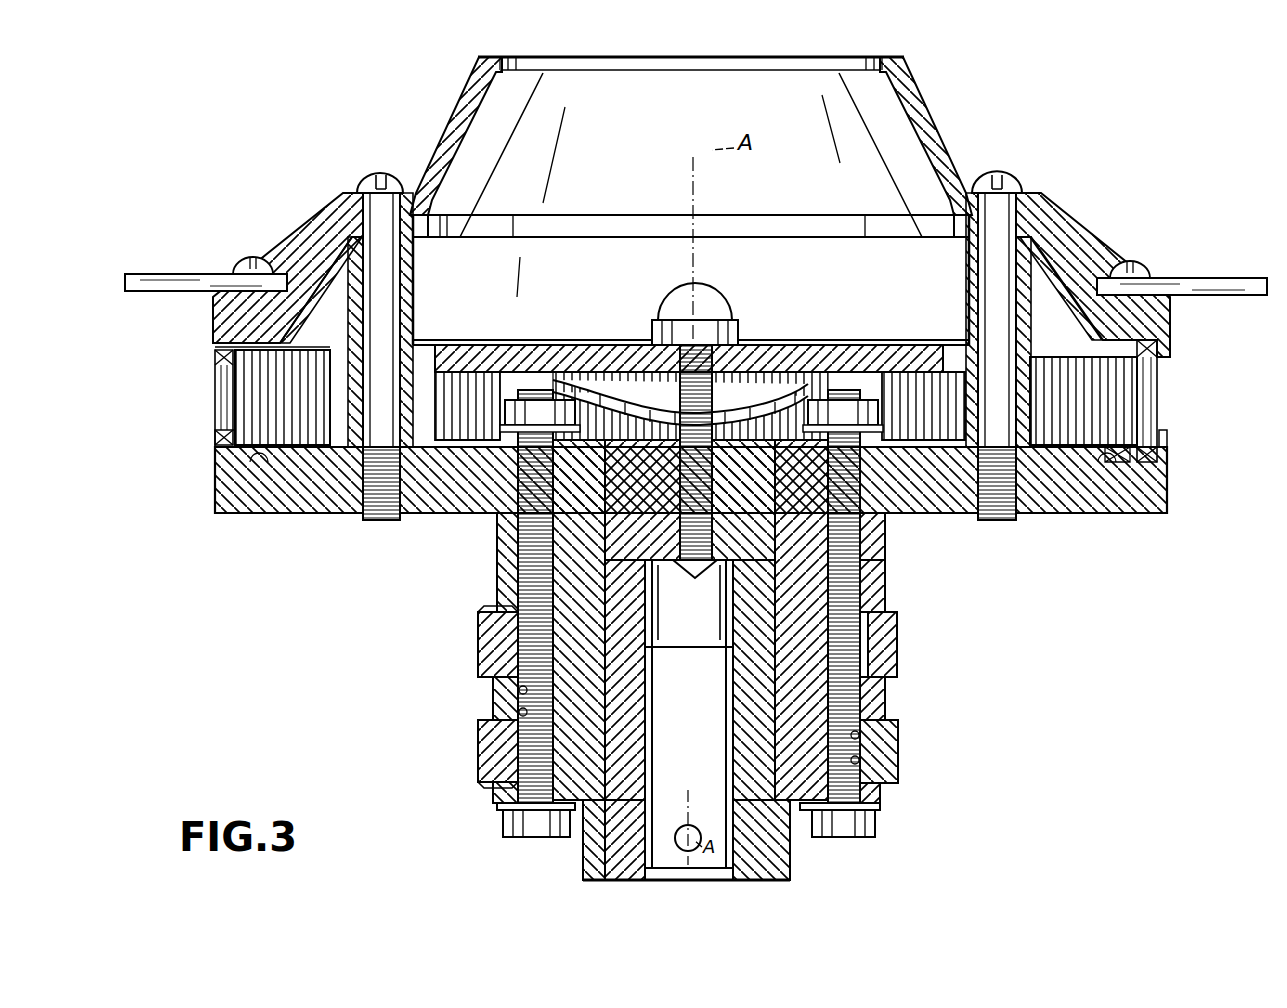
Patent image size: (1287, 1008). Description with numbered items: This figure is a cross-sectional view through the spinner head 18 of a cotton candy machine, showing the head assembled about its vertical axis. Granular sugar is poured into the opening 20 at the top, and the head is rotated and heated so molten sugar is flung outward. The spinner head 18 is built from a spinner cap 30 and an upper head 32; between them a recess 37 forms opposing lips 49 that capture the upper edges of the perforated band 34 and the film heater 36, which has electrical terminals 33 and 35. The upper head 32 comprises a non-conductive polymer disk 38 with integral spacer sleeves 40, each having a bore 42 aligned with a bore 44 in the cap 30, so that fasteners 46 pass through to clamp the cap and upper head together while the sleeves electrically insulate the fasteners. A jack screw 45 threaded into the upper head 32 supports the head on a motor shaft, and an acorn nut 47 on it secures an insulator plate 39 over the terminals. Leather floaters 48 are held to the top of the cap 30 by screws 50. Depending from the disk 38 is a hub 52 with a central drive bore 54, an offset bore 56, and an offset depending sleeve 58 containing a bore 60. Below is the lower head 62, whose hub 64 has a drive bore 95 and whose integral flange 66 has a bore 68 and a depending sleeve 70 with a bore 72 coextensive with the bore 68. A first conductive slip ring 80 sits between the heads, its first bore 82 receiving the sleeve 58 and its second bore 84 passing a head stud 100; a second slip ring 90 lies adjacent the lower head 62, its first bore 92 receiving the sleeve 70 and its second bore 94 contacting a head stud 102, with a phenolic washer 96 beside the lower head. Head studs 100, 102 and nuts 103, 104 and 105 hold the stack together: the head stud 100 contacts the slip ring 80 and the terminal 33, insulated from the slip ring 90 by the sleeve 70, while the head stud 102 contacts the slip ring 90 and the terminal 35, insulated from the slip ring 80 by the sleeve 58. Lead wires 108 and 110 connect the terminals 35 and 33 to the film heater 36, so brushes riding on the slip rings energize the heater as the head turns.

The spinner head 18 is at (307, 600).
The opening 20 is at (728, 63).
The spinner cap 30 is at (1040, 197).
The upper head 32 is at (497, 548).
The electrical terminal 33 is at (490, 432).
The perforated band 34 is at (1166, 440).
The electrical terminal 35 is at (928, 465).
The film heater 36 is at (1150, 392).
The recess 37 is at (1106, 462).
The disk 38 is at (1170, 497).
The insulator plate 39 is at (689, 324).
The spacer sleeve 40 is at (1036, 253).
The bore 42 is at (1022, 237).
The bore 44 is at (1018, 190).
The jack screw 45 is at (722, 322).
The fastener 46 is at (1000, 522).
The acorn nut 47 is at (705, 322).
The leather floater 48 is at (1250, 280).
The lip 49 is at (1162, 458).
The screw 50 is at (1142, 268).
The hub 52 is at (888, 600).
The drive bore 54 is at (708, 618).
The bore 56 is at (520, 572).
The depending sleeve 58 is at (872, 650).
The bore 60 is at (888, 578).
The lower head 62 is at (888, 702).
The hub 64 is at (710, 768).
The flange 66 is at (876, 690).
The bore 68 is at (792, 700).
The depending sleeve 70 is at (500, 740).
The bore 72 is at (517, 706).
The first conductive slip ring 80 is at (478, 656).
The first bore 82 is at (866, 622).
The second bore 84 is at (478, 630).
The second slip ring 90 is at (480, 784).
The first bore 92 is at (495, 770).
The second bore 94 is at (898, 762).
The drive bore 95 is at (713, 812).
The phenolic washer 96 is at (882, 802).
The head stud 100 is at (495, 690).
The head stud 102 is at (862, 742).
The nut 103 is at (535, 400).
The nut 104 is at (862, 824).
The nut 105 is at (852, 402).
The lead wire 108 is at (776, 385).
The lead wire 110 is at (587, 348).